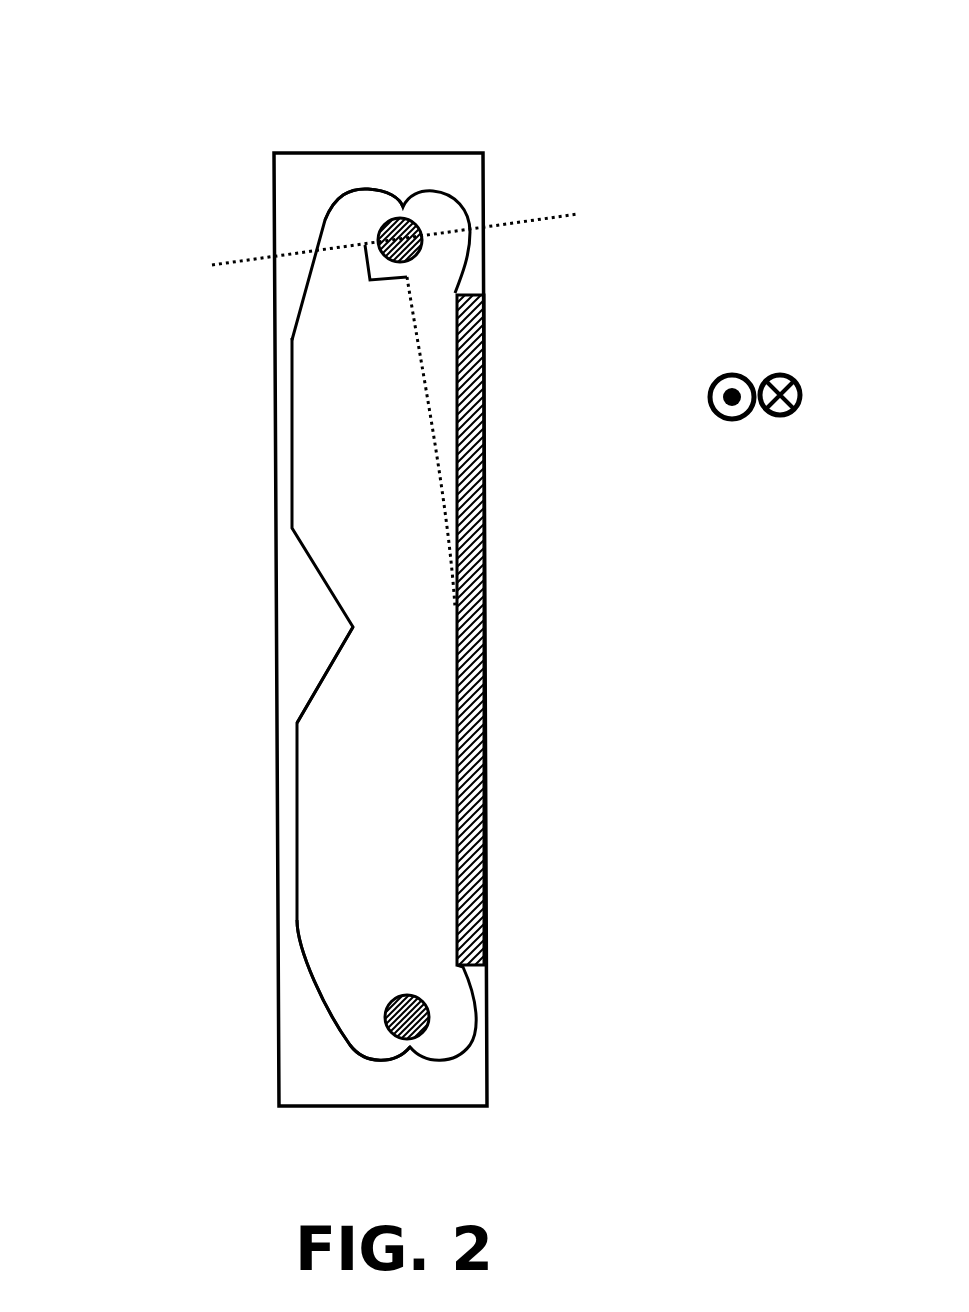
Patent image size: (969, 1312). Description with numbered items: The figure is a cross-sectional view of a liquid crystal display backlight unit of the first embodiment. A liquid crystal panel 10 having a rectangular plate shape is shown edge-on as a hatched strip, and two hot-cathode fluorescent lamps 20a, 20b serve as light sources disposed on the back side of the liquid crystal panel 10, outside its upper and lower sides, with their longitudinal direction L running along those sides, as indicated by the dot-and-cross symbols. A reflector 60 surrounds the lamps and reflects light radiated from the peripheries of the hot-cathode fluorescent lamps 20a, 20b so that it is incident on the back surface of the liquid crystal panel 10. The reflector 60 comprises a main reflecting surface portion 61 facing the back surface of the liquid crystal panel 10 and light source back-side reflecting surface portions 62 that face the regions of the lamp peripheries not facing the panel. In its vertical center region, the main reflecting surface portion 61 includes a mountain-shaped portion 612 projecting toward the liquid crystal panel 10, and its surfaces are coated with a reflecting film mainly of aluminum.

The liquid crystal panel 10 is at (485, 620).
The hot-cathode fluorescent lamp 20a is at (413, 220).
The hot-cathode fluorescent lamp 20b is at (427, 1017).
The reflector 60 is at (287, 180).
The main reflecting surface portion 61 is at (303, 798).
The mountain-shaped portion 612 is at (345, 663).
The light source back-side reflecting surface portion 62 is at (373, 203).
The longitudinal direction L is at (777, 428).